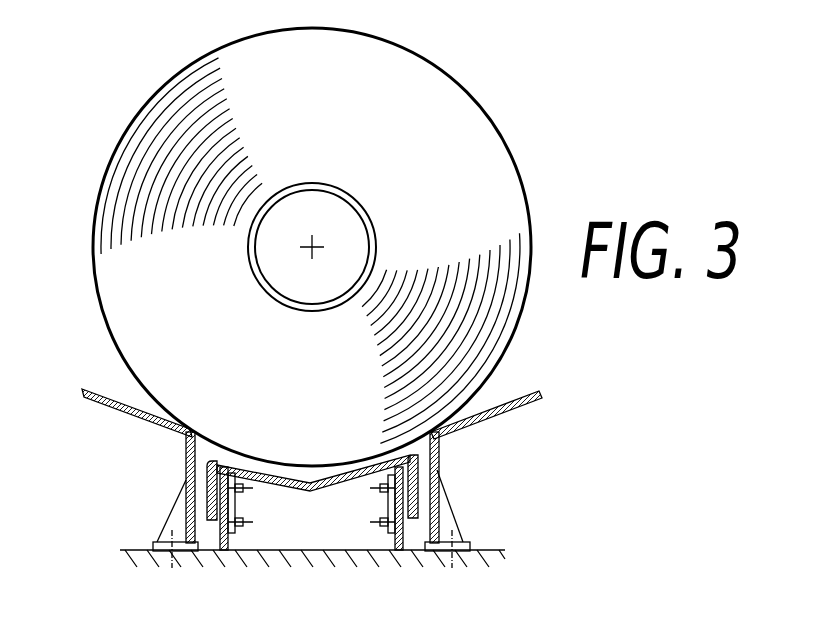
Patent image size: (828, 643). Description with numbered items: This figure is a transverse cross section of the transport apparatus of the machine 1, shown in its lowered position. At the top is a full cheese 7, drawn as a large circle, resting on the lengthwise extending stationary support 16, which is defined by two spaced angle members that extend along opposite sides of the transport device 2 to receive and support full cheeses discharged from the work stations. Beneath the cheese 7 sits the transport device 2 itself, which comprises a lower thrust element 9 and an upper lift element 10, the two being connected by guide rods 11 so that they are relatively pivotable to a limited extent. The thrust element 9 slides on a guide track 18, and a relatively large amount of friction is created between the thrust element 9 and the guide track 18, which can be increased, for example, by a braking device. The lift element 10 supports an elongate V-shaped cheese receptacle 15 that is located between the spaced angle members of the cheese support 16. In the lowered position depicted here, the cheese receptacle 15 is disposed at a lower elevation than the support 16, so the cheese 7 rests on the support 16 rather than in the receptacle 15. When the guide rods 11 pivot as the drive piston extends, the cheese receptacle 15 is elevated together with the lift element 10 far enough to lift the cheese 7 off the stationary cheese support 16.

The machine 1 is at (263, 613).
The transport device 2 is at (480, 471).
The cheese 7 is at (472, 135).
The thrust element 9 is at (402, 547).
The lift element 10 is at (397, 460).
The guide rods 11 is at (380, 507).
The cheese receptacle 15 is at (309, 484).
The stationary support 16 is at (95, 402).
The guide track 18 is at (327, 538).